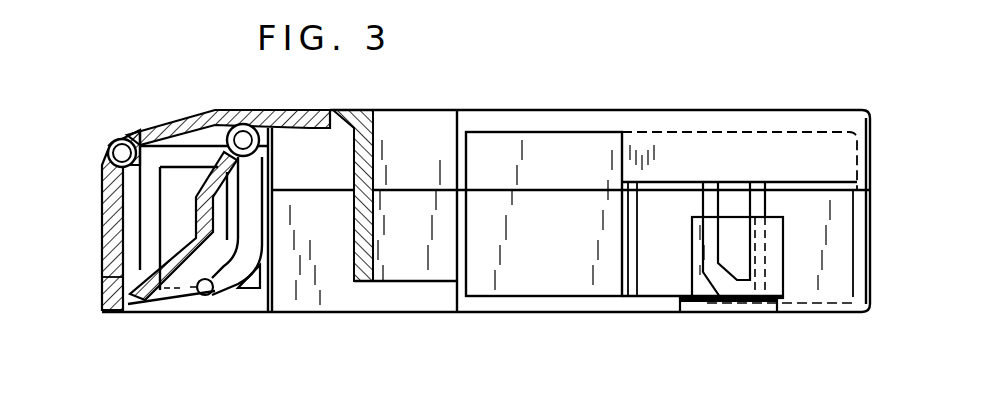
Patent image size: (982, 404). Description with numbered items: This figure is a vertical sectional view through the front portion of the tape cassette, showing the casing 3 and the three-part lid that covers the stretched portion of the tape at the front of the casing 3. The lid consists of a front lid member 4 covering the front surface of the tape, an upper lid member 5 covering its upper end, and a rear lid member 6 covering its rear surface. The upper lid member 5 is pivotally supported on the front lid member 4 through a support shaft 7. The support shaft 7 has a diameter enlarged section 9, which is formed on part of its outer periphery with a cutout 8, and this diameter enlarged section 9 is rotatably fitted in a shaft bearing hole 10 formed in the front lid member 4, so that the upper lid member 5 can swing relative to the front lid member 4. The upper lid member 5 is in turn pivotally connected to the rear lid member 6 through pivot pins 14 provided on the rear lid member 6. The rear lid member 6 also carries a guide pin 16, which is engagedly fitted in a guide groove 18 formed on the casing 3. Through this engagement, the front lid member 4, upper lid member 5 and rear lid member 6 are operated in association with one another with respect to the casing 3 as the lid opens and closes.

The casing 3 is at (356, 112).
The front lid member 4 is at (102, 242).
The upper lid member 5 is at (184, 118).
The rear lid member 6 is at (147, 311).
The support shaft 7 is at (107, 142).
The cutout 8 is at (104, 195).
The diameter enlarged section 9 is at (110, 160).
The shaft bearing hole 10 is at (121, 138).
The pivot pins 14 is at (284, 108).
The guide pin 16 is at (208, 297).
The guide groove 18 is at (232, 297).